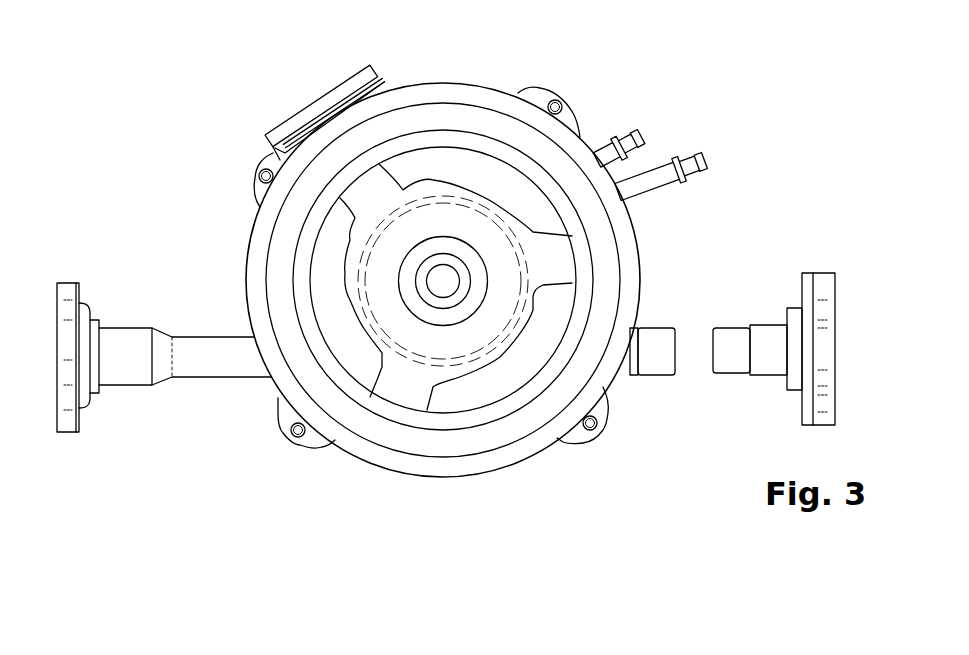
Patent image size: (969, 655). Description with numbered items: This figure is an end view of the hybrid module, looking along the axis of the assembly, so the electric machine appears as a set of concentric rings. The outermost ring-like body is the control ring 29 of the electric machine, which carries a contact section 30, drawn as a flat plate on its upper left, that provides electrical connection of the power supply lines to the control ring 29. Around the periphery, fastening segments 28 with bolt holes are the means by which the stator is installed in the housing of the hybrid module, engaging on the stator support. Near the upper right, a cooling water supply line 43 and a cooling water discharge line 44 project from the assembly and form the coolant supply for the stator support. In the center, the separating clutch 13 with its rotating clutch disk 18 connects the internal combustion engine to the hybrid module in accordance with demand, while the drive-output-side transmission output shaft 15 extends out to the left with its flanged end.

The separating clutch 13 is at (530, 252).
The transmission output shaft 15 is at (192, 343).
The clutch disk 18 is at (610, 267).
The fastening segments 28 is at (255, 193).
The control ring 29 is at (474, 80).
The contact section 30 is at (308, 115).
The cooling water supply line 43 is at (613, 133).
The cooling water discharge line 44 is at (660, 160).